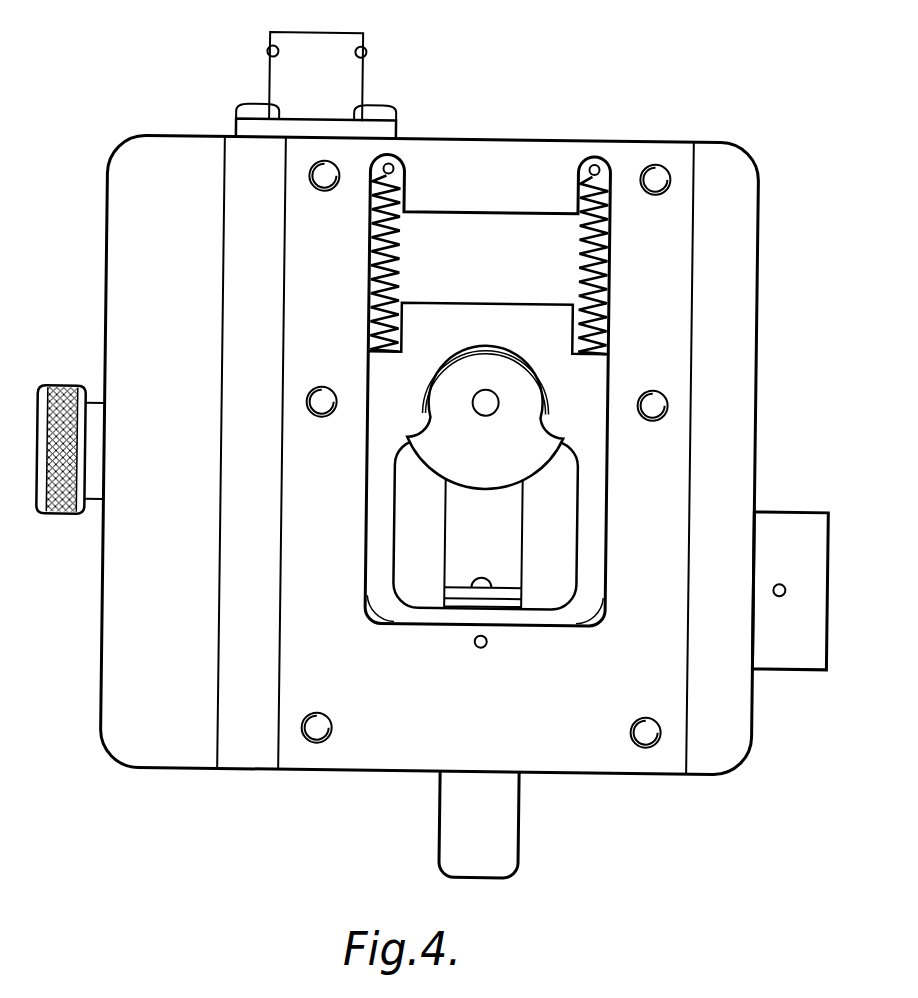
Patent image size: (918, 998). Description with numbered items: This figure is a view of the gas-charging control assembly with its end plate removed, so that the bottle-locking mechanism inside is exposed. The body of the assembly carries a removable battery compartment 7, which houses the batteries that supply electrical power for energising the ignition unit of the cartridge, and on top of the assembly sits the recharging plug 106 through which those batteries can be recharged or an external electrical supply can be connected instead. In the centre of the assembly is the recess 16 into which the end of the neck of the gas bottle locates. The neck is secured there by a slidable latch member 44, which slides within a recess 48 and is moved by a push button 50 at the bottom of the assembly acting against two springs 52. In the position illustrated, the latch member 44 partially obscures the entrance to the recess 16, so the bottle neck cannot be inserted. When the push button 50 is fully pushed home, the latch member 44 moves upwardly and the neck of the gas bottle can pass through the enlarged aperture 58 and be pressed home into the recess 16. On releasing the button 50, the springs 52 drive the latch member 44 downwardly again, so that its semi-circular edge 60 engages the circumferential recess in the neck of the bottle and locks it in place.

The removable battery compartment 7 is at (116, 685).
The recharging plug 106 is at (266, 70).
The recess 48 is at (397, 619).
The springs 52 is at (385, 263).
The slidable latch member 44 is at (451, 318).
The enlarged aperture 58 is at (396, 553).
The recess 16 is at (512, 463).
The semi-circular edge 60 is at (444, 351).
The push button 50 is at (475, 820).